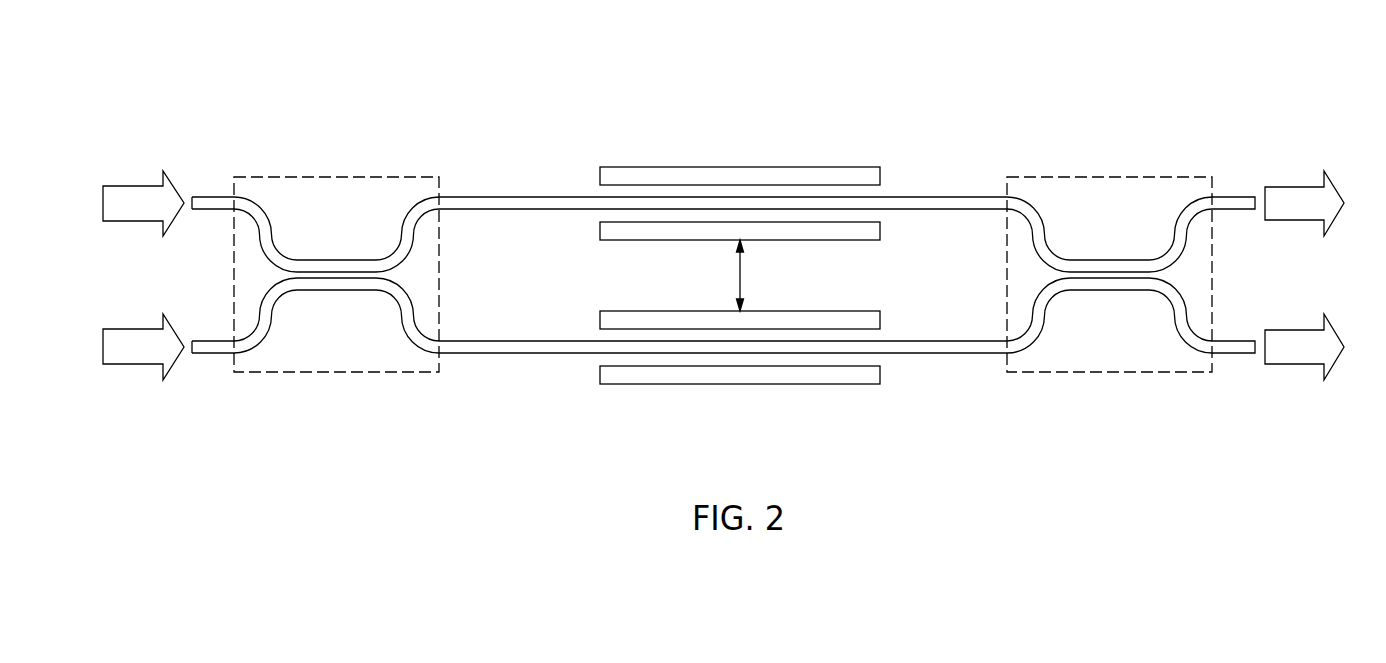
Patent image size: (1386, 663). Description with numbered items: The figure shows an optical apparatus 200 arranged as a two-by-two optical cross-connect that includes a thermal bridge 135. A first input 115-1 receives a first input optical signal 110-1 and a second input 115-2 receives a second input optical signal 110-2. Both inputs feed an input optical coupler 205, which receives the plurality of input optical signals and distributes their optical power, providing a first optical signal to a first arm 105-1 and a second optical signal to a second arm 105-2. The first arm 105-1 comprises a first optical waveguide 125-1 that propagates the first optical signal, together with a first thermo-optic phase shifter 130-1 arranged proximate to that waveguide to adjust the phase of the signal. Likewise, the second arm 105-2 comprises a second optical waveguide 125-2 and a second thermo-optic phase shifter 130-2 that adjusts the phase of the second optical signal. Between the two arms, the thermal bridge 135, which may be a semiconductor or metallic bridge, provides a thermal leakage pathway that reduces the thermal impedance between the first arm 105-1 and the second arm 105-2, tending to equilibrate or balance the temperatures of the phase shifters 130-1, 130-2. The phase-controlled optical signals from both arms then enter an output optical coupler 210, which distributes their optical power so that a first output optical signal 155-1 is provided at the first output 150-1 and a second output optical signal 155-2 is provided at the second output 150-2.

The optical apparatus 200 is at (1236, 77).
The first arm 105-1 is at (752, 181).
The second arm 105-2 is at (747, 391).
The first input optical signal 110-1 is at (125, 221).
The second input optical signal 110-2 is at (113, 364).
The first input 115-1 is at (212, 197).
The second input 115-2 is at (213, 353).
The first optical waveguide 125-1 is at (545, 210).
The second optical waveguide 125-2 is at (556, 340).
The first thermo-optic phase shifter 130-1 is at (873, 144).
The second thermo-optic phase shifter 130-2 is at (880, 406).
The thermal bridge 135 is at (742, 270).
The first output waveguide section 150-1 is at (1238, 197).
The second output waveguide section 150-2 is at (1233, 353).
The first output optical signal 155-1 is at (1300, 221).
The second output optical signal 155-2 is at (1303, 364).
The input optical coupler 205 is at (343, 372).
The output optical coupler 210 is at (1172, 372).